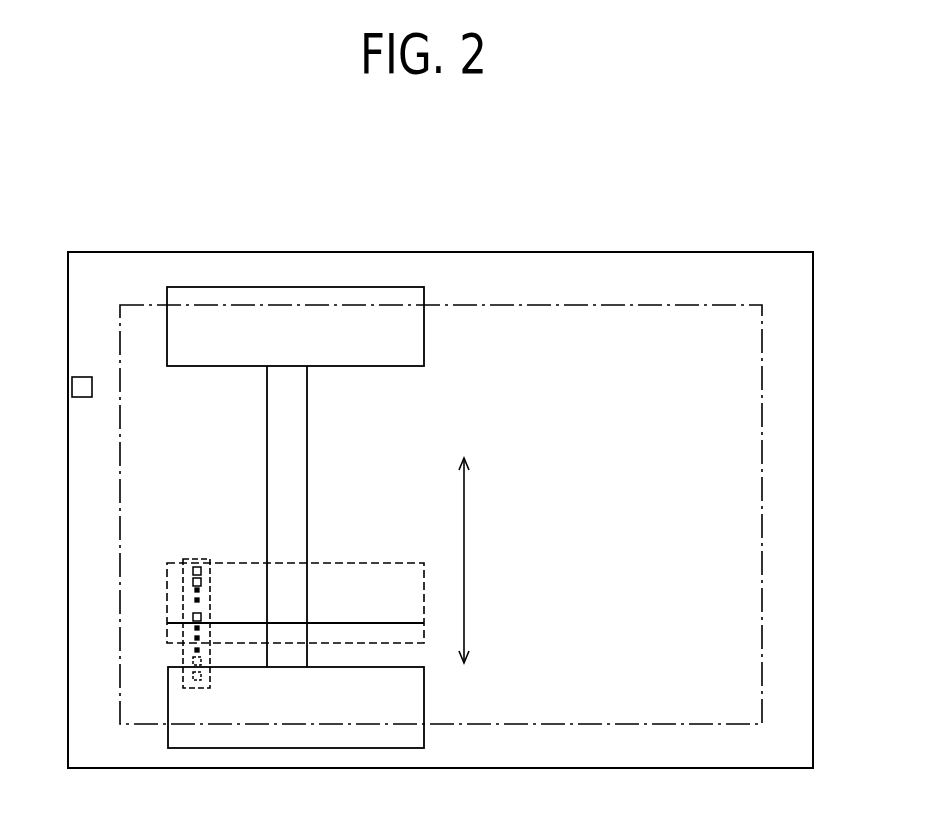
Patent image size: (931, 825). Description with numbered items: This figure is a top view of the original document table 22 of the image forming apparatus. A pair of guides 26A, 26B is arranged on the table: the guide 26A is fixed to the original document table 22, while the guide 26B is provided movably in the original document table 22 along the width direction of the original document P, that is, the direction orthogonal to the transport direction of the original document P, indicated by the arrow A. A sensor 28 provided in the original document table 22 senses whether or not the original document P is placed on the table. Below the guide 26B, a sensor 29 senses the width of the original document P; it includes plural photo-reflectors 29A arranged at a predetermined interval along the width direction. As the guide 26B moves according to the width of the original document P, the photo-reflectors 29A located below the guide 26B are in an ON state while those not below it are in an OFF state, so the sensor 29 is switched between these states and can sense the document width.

The original document table 22 is at (467, 252).
The original document P is at (599, 305).
The guide 26A is at (424, 333).
The guide 26B is at (424, 697).
The sensor 28 is at (83, 397).
The sensor 29 is at (182, 656).
The photo-reflectors 29A is at (203, 583).
The arrow A is at (466, 553).